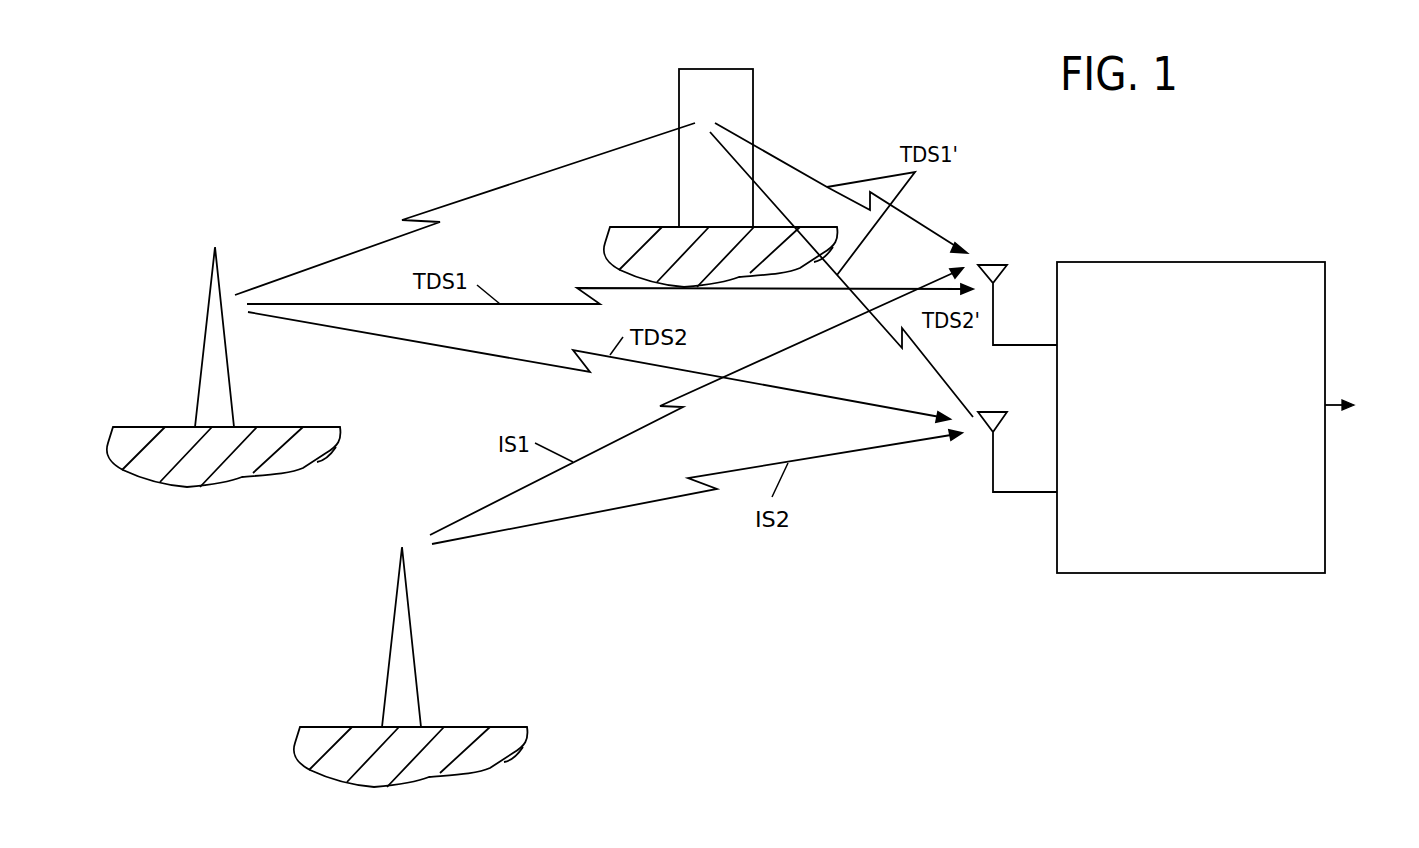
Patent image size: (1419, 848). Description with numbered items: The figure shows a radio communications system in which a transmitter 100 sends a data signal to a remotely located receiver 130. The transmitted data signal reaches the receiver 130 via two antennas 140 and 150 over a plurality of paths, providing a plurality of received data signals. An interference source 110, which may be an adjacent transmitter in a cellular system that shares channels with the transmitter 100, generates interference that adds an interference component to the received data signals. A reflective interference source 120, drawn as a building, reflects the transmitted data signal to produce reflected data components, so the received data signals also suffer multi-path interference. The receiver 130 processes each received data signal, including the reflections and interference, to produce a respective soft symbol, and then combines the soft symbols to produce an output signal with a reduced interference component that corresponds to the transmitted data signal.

The transmitter 100 is at (232, 402).
The interference source 110 is at (422, 698).
The reflective interference source 120 is at (753, 82).
The receiver 130 is at (1272, 262).
The antenna 140 is at (1005, 342).
The antenna 150 is at (1007, 488).